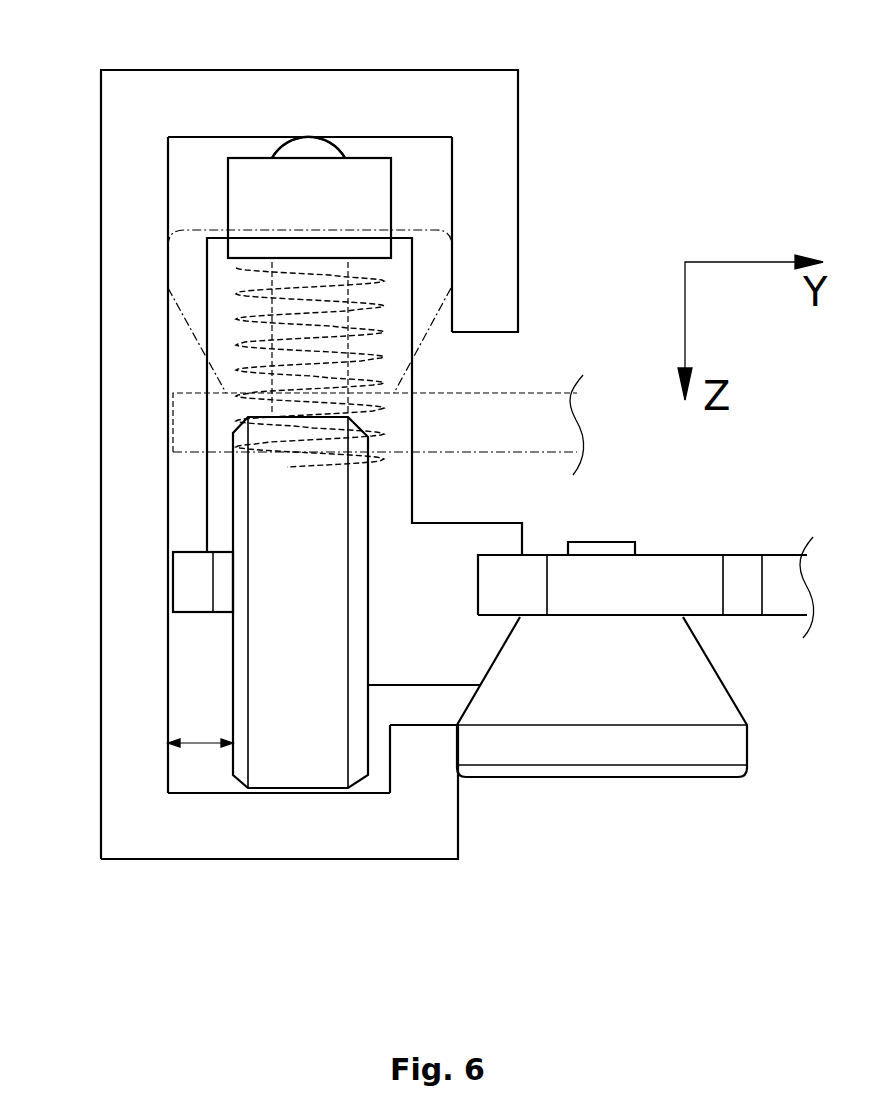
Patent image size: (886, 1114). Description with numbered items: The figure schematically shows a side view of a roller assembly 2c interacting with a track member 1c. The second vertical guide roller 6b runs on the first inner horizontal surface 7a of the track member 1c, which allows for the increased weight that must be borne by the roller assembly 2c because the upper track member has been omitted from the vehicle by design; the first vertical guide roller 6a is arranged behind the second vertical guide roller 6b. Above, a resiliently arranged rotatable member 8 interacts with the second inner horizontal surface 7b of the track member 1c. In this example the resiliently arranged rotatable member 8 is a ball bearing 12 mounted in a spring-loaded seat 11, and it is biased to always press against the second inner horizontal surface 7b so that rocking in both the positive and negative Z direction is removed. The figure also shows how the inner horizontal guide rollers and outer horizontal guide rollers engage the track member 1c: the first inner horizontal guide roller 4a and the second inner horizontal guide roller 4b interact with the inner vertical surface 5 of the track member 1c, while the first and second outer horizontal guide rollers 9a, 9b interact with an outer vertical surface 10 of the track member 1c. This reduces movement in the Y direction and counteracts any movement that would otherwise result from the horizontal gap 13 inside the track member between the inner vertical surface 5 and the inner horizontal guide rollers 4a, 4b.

The track member 1c is at (100, 102).
The roller assembly 2c is at (692, 70).
The first inner horizontal guide roller 4a is at (190, 278).
The second inner horizontal guide roller 4b is at (187, 253).
The inner vertical surface 5 is at (167, 494).
The first vertical guide roller 6a is at (232, 690).
The second vertical guide roller 6b is at (247, 657).
The first inner horizontal surface 7a is at (215, 795).
The second inner horizontal surface 7b is at (368, 137).
The resiliently arranged rotatable member 8 is at (308, 152).
The first outer horizontal guide roller 9a is at (748, 730).
The second outer horizontal guide roller 9b is at (748, 760).
The outer vertical surface 10 is at (458, 823).
The spring-loaded seat 11 is at (280, 198).
The ball bearing 12 is at (308, 147).
The horizontal gap 13 is at (200, 745).